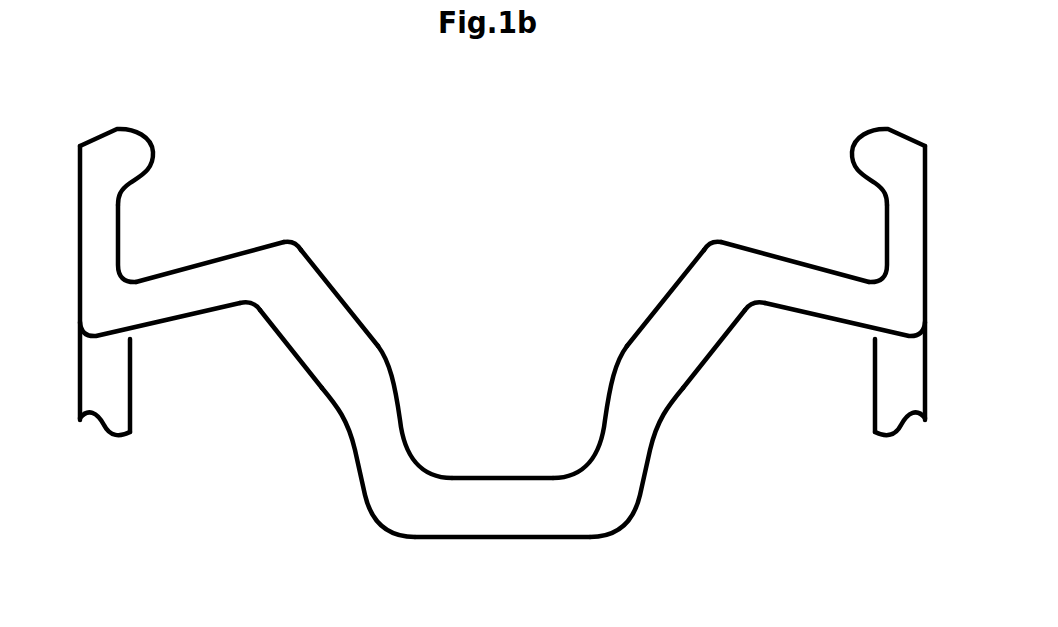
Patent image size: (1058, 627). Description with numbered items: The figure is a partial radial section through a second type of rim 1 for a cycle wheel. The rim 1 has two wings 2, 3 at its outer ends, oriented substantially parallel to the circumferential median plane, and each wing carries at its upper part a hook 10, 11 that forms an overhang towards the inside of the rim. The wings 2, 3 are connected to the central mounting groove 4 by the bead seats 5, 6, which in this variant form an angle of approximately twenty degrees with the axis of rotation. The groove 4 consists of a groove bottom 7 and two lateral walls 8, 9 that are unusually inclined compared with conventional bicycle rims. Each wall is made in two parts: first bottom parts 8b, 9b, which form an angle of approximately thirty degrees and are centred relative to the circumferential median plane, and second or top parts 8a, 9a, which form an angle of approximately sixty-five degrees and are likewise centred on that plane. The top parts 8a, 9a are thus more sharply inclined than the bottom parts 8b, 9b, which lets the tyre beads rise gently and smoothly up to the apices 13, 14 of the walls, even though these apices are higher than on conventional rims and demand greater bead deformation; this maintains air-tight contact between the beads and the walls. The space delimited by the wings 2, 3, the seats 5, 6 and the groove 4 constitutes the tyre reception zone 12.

The rim 1 is at (175, 459).
The wing 2 is at (118, 237).
The wing 3 is at (887, 252).
The mounting groove 4 is at (508, 485).
The bead seat 5 is at (180, 273).
The bead seat 6 is at (790, 263).
The groove bottom 7 is at (523, 480).
The lateral wall 8 is at (356, 393).
The top part of lateral wall 8a is at (340, 292).
The bottom part of lateral wall 8b is at (396, 400).
The lateral wall 9 is at (642, 393).
The top part of lateral wall 9a is at (662, 333).
The bottom part of lateral wall 9b is at (607, 412).
The hook 10 is at (148, 135).
The hook 11 is at (853, 158).
The tyre reception zone 12 is at (519, 199).
The apex 13 is at (293, 243).
The apex 14 is at (708, 246).